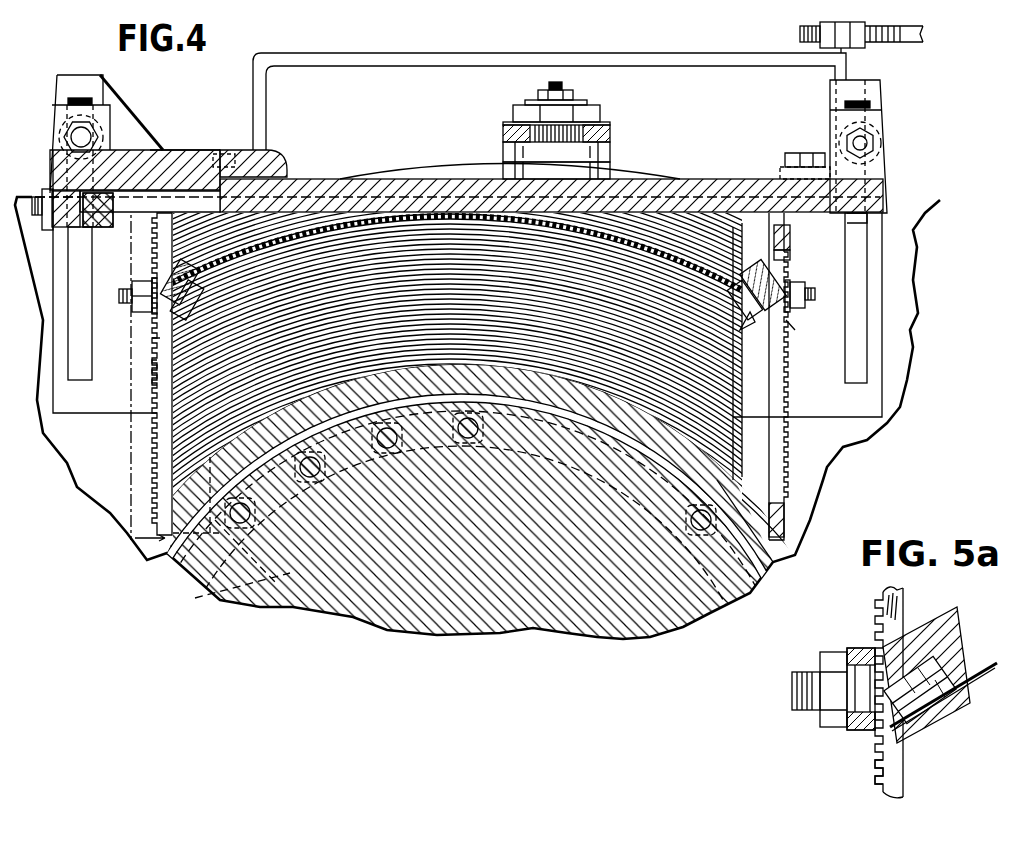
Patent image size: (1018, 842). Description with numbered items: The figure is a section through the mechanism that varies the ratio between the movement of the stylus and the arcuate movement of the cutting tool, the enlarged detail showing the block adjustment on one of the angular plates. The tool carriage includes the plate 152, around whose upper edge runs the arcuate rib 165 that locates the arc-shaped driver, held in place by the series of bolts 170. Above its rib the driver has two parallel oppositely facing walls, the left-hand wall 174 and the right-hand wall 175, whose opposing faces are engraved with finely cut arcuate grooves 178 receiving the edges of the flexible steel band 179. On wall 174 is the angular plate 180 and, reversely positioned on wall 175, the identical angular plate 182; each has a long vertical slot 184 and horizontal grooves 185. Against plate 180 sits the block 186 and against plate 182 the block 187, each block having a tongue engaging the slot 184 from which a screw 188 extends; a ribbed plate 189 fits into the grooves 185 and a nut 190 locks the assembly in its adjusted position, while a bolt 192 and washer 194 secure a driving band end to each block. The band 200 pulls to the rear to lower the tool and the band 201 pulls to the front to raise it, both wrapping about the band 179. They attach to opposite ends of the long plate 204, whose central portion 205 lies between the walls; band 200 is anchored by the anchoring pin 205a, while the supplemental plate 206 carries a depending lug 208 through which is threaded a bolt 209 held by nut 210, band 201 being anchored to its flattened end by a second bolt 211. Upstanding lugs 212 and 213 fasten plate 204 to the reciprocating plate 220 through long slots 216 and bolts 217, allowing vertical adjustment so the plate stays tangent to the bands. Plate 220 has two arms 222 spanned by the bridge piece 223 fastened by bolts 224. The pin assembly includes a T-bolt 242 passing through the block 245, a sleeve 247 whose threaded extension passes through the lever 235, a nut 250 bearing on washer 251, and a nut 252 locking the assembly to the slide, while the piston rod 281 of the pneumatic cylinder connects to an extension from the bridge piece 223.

In FIG. 4, the plate 152 is at (365, 612).
In FIG. 4, the arcuate rib 165 is at (207, 592).
In FIG. 4, the bolts 170 is at (300, 470).
In FIG. 4, the left-hand wall 174 is at (187, 428).
In FIG. 4, the right-hand wall 175 is at (78, 284).
In FIG. 4, the arcuate grooves 178 is at (734, 438).
In FIG. 4, the flexible steel band 179 is at (747, 322).
In FIG. 4, the angular plate 180 is at (160, 481).
In FIG. 5a, the angular plate 180 is at (904, 608).
In FIG. 4, the angular plate 182 is at (787, 402).
In FIG. 4, the vertical slot 184 is at (786, 441).
In FIG. 4, the horizontal grooves 185 is at (154, 380).
In FIG. 5a, the horizontal grooves 185 is at (880, 786).
In FIG. 4, the block 186 is at (170, 302).
In FIG. 5a, the block 186 is at (958, 618).
In FIG. 4, the block 187 is at (789, 270).
In FIG. 4, the screw 188 is at (124, 303).
In FIG. 5a, the screw 188 is at (806, 672).
In FIG. 4, the plate 189 is at (152, 280).
In FIG. 5a, the plate 189 is at (860, 731).
In FIG. 4, the nut 190 is at (132, 285).
In FIG. 5a, the nut 190 is at (834, 652).
In FIG. 4, the bolt 192 is at (183, 308).
In FIG. 5a, the bolt 192 is at (960, 716).
In FIG. 4, the washer 194 is at (152, 339).
In FIG. 4, the band 200 is at (708, 205).
In FIG. 5a, the band 200 is at (968, 677).
In FIG. 4, the band 201 is at (186, 210).
In FIG. 4, the plate 204 is at (209, 145).
In FIG. 4, the central portion 205 is at (445, 178).
In FIG. 4, the anchoring pin 205a is at (848, 226).
In FIG. 4, the supplemental plate 206 is at (155, 158).
In FIG. 4, the depending lug 208 is at (61, 229).
In FIG. 4, the bolt 209 is at (37, 196).
In FIG. 4, the nut 210 is at (45, 232).
In FIG. 4, the second bolt 211 is at (100, 229).
In FIG. 4, the upstanding lug 212 is at (878, 171).
In FIG. 4, the second lug 213 is at (127, 123).
In FIG. 4, the slots 216 is at (70, 318).
In FIG. 4, the bolts 217 is at (84, 136).
In FIG. 4, the reciprocating plate 220 is at (875, 382).
In FIG. 4, the arms 222 is at (782, 170).
In FIG. 4, the bridge piece 223 is at (704, 66).
In FIG. 4, the bolts 224 is at (259, 152).
In FIG. 4, the lever 235 is at (611, 135).
In FIG. 4, the T-bolt 242 is at (548, 84).
In FIG. 4, the block 245 is at (611, 168).
In FIG. 4, the sleeve 247 is at (611, 152).
In FIG. 4, the nut 250 is at (602, 116).
In FIG. 4, the washer 251 is at (504, 123).
In FIG. 4, the nut 252 is at (575, 97).
In FIG. 4, the piston rod 281 is at (897, 44).